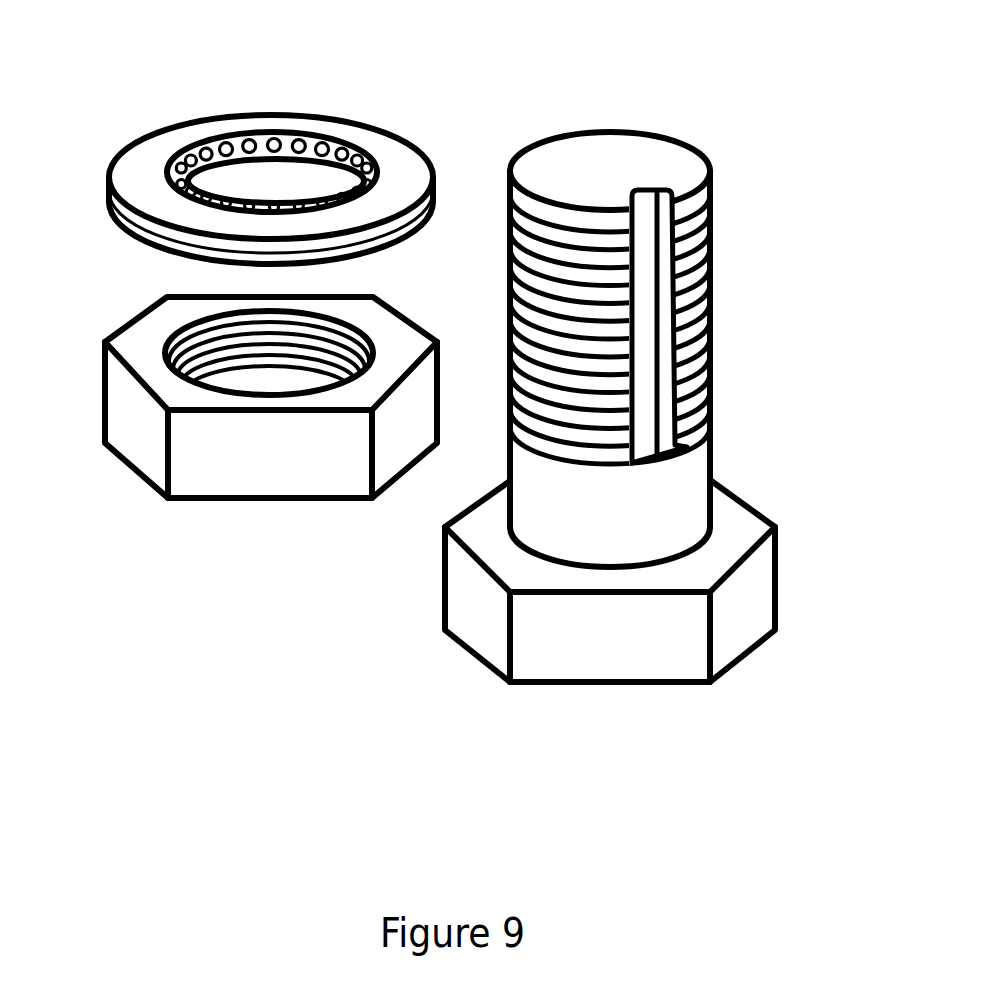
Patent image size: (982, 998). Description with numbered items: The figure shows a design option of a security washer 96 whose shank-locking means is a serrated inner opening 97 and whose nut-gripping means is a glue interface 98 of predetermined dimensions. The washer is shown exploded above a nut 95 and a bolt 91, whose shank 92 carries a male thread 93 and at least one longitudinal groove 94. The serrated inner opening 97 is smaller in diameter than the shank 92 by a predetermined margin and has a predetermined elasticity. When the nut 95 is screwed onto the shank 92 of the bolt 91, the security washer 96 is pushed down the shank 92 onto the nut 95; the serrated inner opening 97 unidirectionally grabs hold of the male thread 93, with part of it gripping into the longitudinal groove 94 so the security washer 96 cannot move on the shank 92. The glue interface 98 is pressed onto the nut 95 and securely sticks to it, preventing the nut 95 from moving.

The bolt 91 is at (488, 603).
The shank 92 is at (683, 485).
The male thread 93 is at (713, 352).
The longitudinal groove 94 is at (647, 263).
The nut 95 is at (242, 472).
The security washer 96 is at (147, 157).
The serrated inner opening 97 is at (277, 133).
The glue interface 98 is at (140, 240).